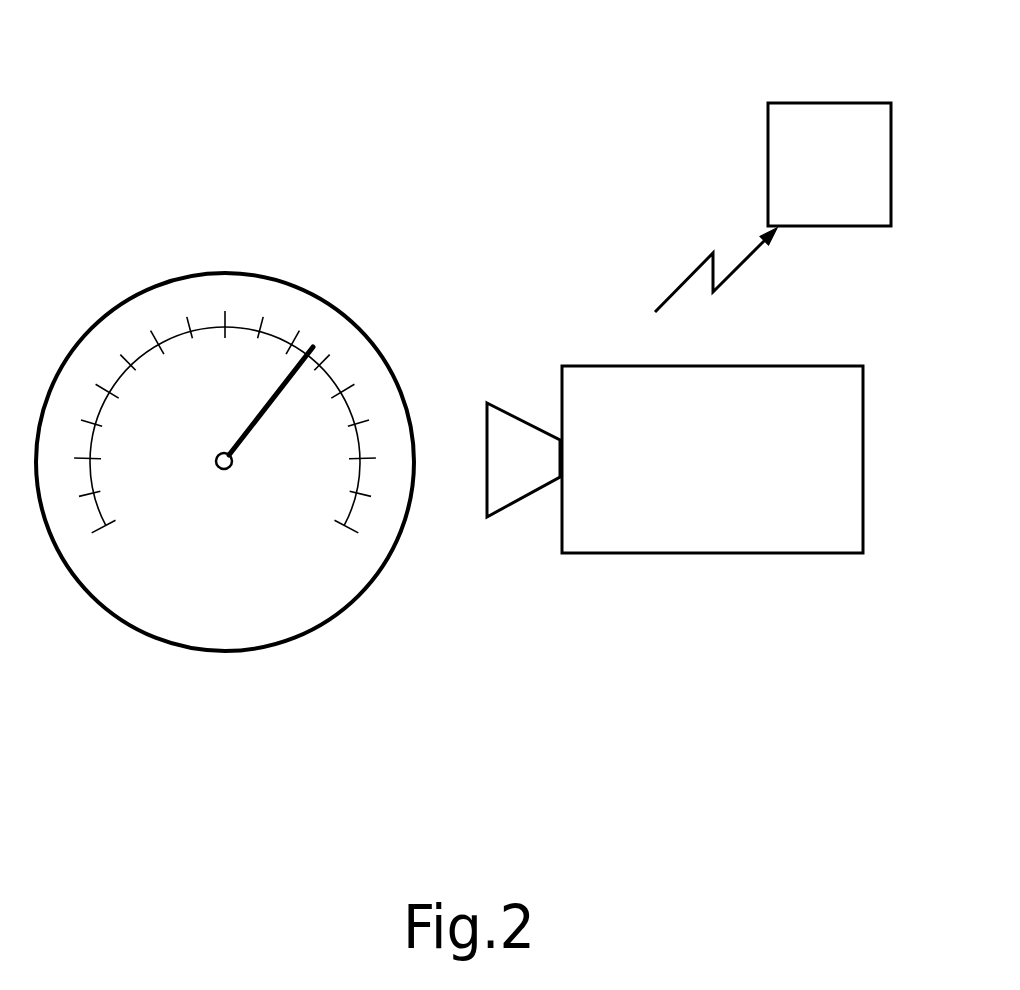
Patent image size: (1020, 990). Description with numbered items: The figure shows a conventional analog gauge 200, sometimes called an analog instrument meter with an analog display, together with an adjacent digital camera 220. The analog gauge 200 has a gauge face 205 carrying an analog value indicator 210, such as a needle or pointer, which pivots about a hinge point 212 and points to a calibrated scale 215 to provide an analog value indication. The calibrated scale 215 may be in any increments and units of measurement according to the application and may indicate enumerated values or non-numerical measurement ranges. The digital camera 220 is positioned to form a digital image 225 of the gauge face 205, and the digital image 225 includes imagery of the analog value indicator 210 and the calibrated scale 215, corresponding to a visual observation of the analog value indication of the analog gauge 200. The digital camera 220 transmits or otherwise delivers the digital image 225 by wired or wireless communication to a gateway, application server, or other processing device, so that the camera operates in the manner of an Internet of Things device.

The analog gauge 200 is at (260, 456).
The gauge face 205 is at (225, 462).
The analog value indicator 210 is at (285, 386).
The hinge point 212 is at (215, 464).
The calibrated scale 215 is at (357, 442).
The digital camera 220 is at (808, 368).
The digital image 225 is at (832, 103).